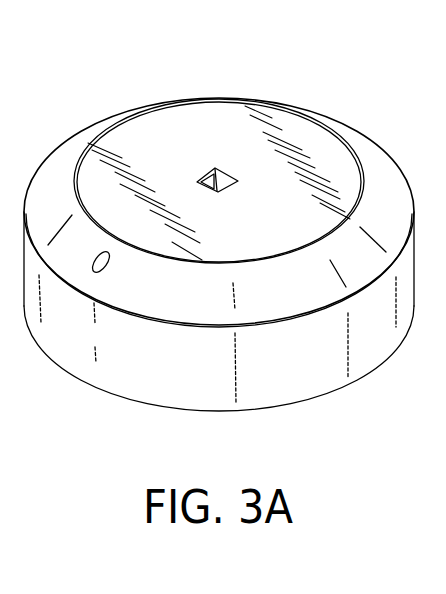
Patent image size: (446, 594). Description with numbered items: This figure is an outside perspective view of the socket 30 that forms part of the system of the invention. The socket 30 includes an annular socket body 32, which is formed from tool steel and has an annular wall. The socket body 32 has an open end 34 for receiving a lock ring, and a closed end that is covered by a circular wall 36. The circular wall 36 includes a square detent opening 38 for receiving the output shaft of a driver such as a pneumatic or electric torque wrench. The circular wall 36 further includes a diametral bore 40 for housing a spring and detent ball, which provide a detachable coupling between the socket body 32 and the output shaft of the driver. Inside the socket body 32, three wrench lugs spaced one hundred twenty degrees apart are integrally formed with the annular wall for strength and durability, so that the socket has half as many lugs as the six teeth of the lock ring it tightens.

The socket 30 is at (117, 90).
The annular socket body 32 is at (185, 373).
The open end 34 is at (300, 362).
The circular wall 36 is at (368, 160).
The marker 38 is at (207, 172).
The diametral bore 40 is at (98, 271).